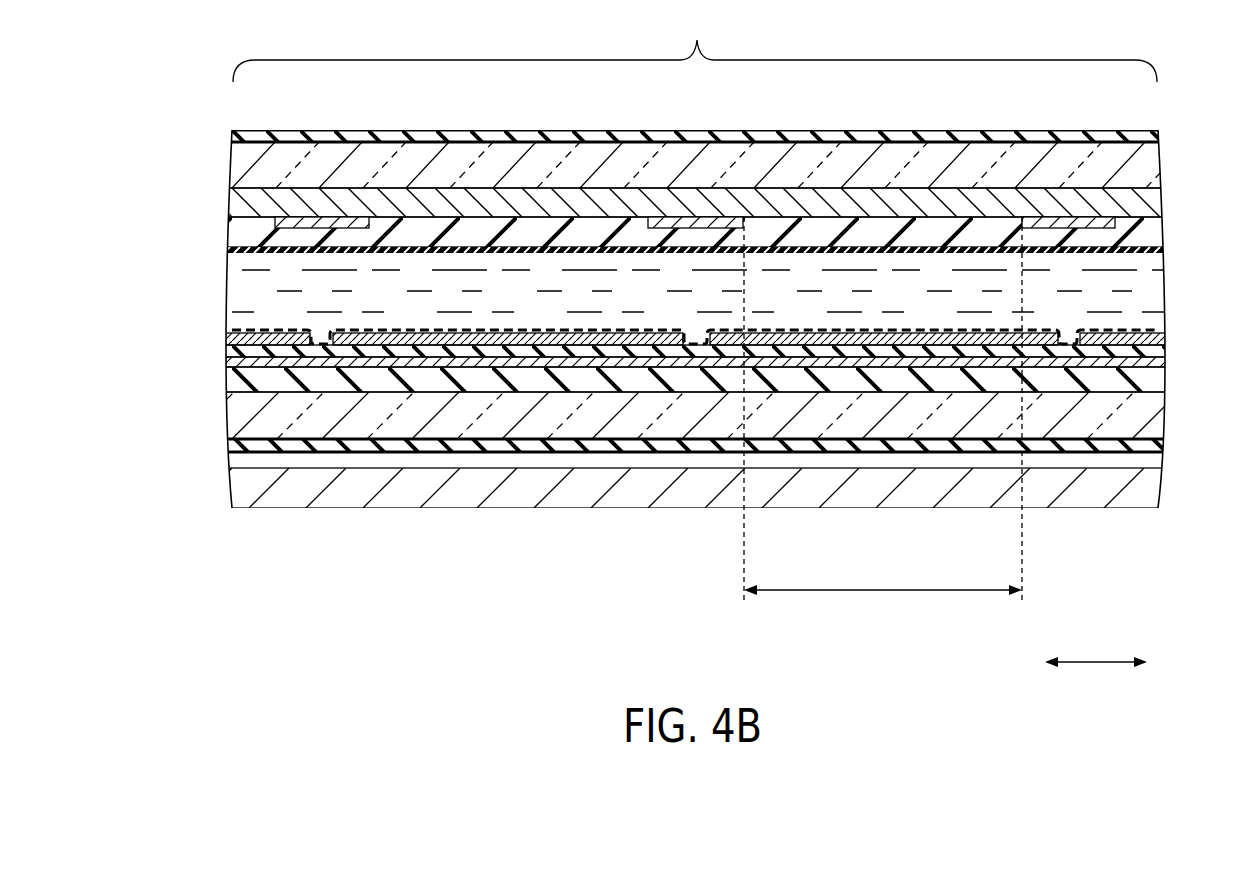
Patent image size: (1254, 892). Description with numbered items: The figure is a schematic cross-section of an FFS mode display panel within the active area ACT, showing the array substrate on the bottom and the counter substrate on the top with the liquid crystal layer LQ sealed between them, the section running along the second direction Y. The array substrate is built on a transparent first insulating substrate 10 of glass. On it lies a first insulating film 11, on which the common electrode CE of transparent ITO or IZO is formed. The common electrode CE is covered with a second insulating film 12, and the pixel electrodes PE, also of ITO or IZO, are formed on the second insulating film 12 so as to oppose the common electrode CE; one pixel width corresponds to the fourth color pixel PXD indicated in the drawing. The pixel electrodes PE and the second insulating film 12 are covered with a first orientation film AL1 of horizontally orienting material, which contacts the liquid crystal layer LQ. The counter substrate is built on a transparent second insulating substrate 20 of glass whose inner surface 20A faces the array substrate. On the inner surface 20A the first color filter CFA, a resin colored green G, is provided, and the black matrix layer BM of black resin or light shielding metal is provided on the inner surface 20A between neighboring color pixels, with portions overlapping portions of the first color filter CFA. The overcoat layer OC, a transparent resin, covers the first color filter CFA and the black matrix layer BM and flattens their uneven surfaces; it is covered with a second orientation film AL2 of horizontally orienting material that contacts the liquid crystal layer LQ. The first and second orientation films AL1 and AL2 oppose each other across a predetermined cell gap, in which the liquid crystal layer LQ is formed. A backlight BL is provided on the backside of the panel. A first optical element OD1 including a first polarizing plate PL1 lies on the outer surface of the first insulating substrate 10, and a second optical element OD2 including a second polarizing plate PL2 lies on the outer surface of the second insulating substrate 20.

The active area ACT is at (695, 48).
The second optical element OD2 is at (649, 122).
The second polarizing plate PL2 is at (237, 137).
The second insulating substrate 20 is at (245, 175).
The inner surface 20A is at (260, 196).
The overcoat layer OC is at (243, 232).
The black matrix layer BM is at (318, 216).
The first color filter CFA is at (509, 155).
The green G is at (522, 208).
The second orientation film AL2 is at (237, 250).
The liquid crystal layer LQ is at (1140, 278).
The first orientation film AL1 is at (237, 330).
The pixel electrode PE is at (272, 341).
The second insulating film 12 is at (240, 351).
The common electrode CE is at (243, 364).
The first insulating film 11 is at (243, 383).
The first insulating substrate 10 is at (245, 424).
The first optical element OD1 is at (649, 468).
The first polarizing plate PL1 is at (243, 444).
The backlight BL is at (245, 490).
The fourth color pixel PXD is at (883, 418).
The second direction Y is at (1096, 677).